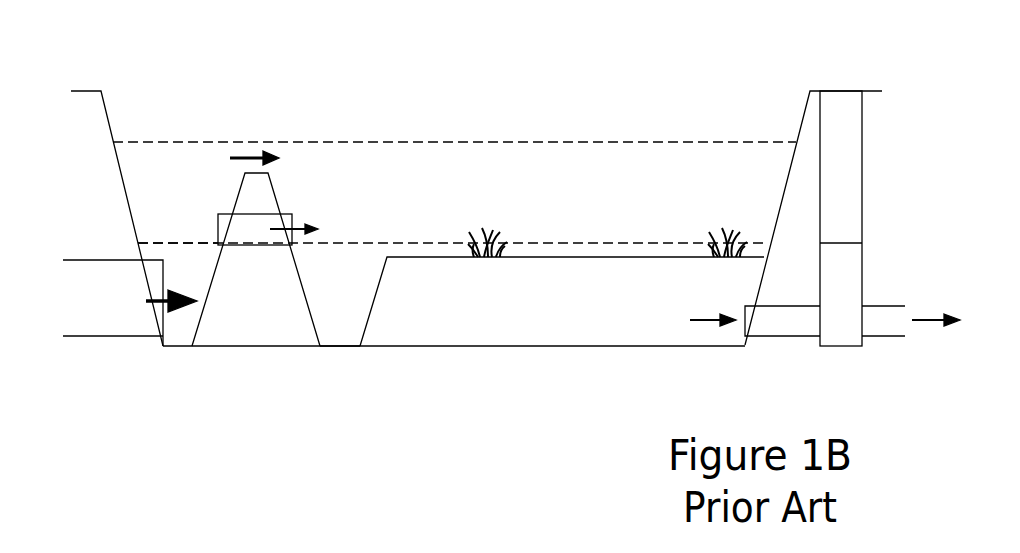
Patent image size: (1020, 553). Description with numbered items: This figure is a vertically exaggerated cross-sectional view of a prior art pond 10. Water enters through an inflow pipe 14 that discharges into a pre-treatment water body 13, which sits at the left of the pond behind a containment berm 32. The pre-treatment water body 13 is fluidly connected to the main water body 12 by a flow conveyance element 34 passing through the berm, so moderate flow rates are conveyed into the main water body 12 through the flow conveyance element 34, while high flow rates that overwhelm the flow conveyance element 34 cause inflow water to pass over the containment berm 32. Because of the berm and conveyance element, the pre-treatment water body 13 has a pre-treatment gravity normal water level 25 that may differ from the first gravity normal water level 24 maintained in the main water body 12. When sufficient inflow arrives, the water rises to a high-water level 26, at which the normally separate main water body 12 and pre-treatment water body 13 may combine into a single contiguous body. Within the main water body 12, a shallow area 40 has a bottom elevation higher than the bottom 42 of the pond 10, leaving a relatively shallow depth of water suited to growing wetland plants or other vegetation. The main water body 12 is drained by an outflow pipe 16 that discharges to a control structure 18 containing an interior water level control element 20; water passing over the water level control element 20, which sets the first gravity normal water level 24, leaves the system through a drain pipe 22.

The pond 10 is at (476, 66).
The main water body 12 is at (337, 218).
The pre-treatment water body 13 is at (165, 218).
The inflow pipe 14 is at (97, 259).
The outflow pipe 16 is at (795, 336).
The control structure 18 is at (845, 91).
The water level control element 20 is at (843, 243).
The drain pipe 22 is at (890, 306).
The first gravity normal water level 24 is at (362, 243).
The pre-treatment gravity normal water level 25 is at (200, 243).
The high-water level 26 is at (360, 141).
The containment berm 32 is at (256, 259).
The flow conveyance element 34 is at (222, 214).
The shallow area 40 is at (555, 257).
The bottom 42 is at (340, 335).